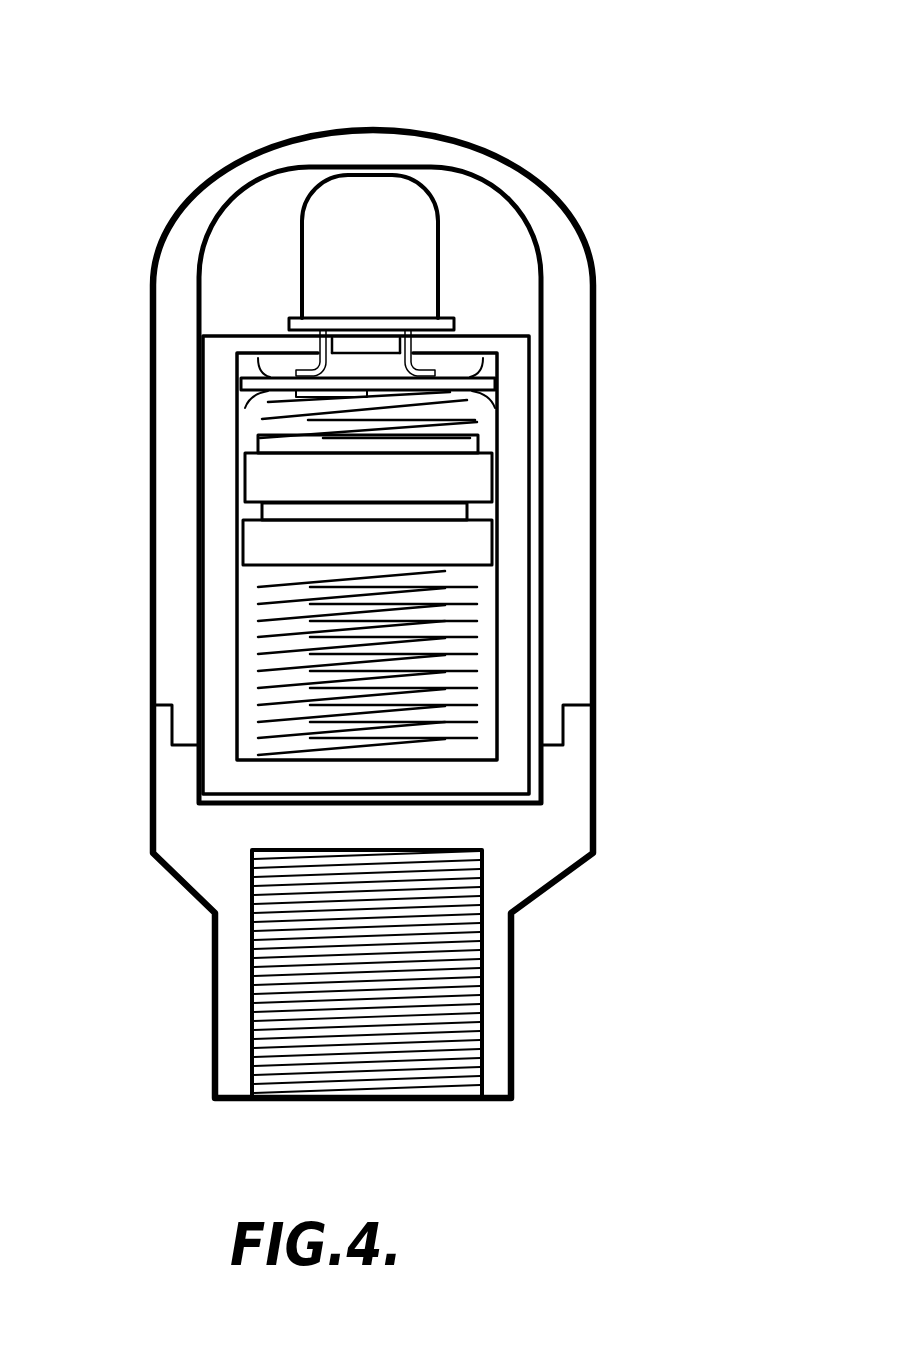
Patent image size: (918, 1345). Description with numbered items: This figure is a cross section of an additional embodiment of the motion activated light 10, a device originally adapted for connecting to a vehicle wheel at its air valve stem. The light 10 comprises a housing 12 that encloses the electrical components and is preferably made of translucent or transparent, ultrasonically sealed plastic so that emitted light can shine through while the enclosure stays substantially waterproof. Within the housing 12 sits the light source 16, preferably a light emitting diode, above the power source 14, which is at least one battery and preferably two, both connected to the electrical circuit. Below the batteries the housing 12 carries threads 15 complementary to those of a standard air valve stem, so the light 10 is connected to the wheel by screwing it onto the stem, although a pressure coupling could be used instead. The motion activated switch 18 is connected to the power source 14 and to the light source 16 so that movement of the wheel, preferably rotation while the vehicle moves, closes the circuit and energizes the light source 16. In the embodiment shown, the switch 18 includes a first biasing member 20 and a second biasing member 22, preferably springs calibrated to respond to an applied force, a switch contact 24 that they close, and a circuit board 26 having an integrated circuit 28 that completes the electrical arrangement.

The motion activated light 10 is at (599, 101).
The housing 12 is at (590, 242).
The power source 14 is at (373, 486).
The threads 15 is at (403, 1042).
The light source 16 is at (380, 250).
The motion activated switch 18 is at (498, 645).
The first biasing member 20 is at (470, 422).
The second biasing member 22 is at (443, 707).
The switch contact 24 is at (449, 556).
The circuit board 26 is at (270, 376).
The integrated circuit 28 is at (450, 392).